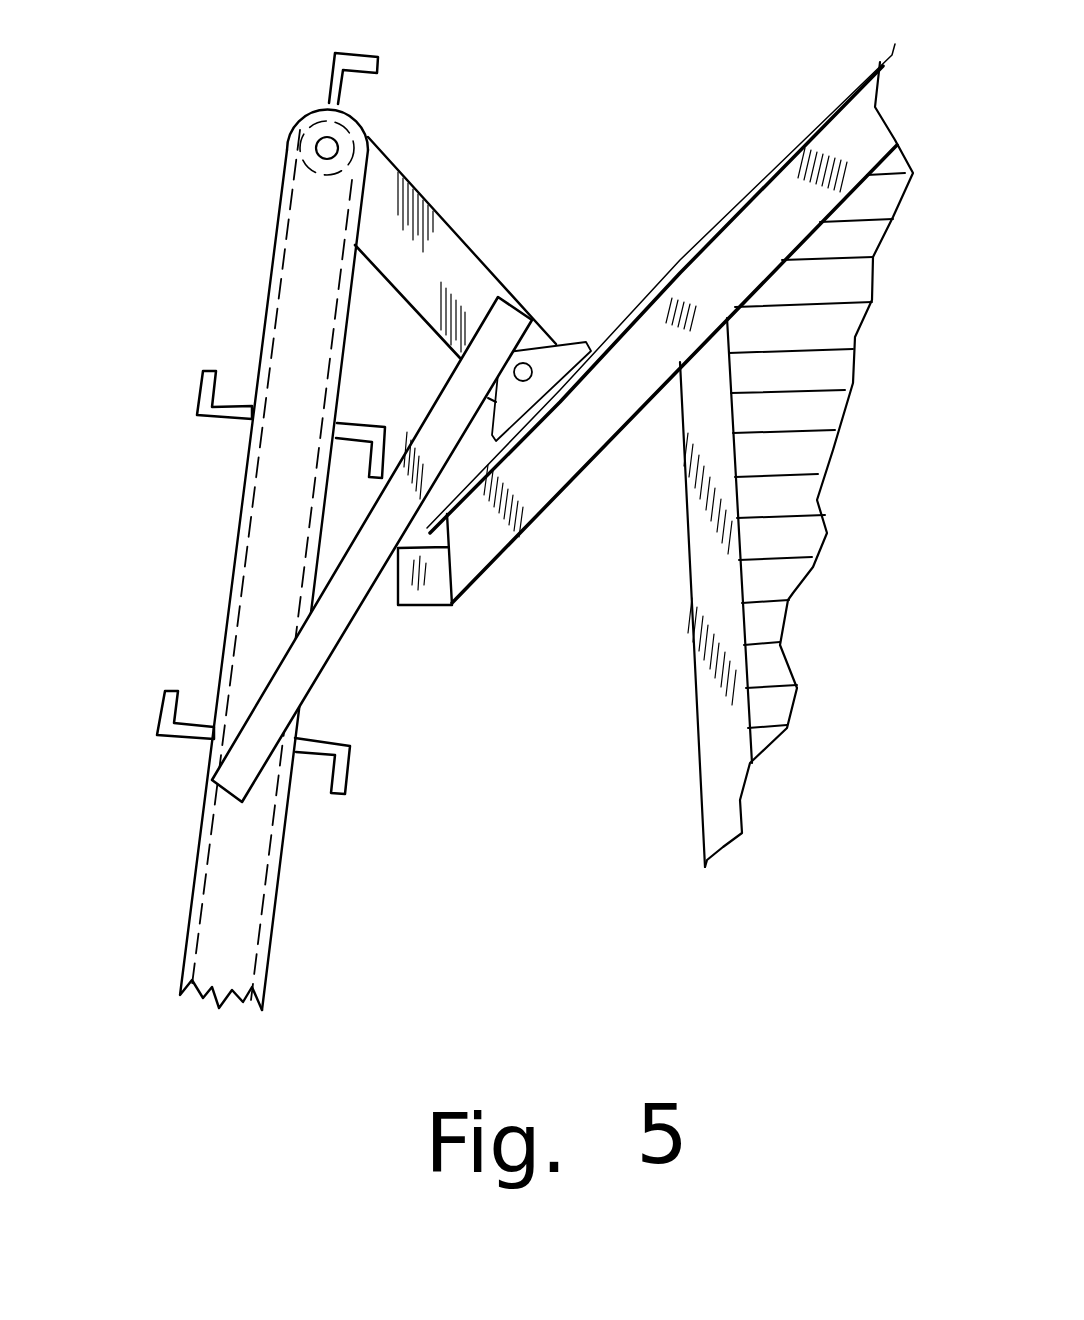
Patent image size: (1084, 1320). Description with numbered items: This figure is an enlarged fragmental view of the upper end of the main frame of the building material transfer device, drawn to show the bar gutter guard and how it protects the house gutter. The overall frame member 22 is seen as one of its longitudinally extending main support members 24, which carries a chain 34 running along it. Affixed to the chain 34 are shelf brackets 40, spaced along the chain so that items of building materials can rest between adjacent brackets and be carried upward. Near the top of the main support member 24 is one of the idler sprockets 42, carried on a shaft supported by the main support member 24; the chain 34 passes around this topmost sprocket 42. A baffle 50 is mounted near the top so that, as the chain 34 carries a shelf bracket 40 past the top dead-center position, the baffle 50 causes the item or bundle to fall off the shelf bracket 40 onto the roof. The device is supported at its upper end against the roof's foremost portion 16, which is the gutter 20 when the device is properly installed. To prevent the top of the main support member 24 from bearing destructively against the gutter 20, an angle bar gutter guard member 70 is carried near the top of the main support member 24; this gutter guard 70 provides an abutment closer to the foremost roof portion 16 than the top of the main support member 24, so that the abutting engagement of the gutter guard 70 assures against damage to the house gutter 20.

The roof's foremost portion 16 is at (453, 572).
The gutter 20 is at (679, 455).
The frame member 22 is at (240, 560).
The main support members 24 is at (265, 297).
The chains 34 is at (243, 498).
The shelf brackets 40 is at (362, 48).
The idler sprockets 42 is at (347, 142).
The baffle 50 is at (430, 270).
The angle bar gutter guard member 70 is at (317, 662).